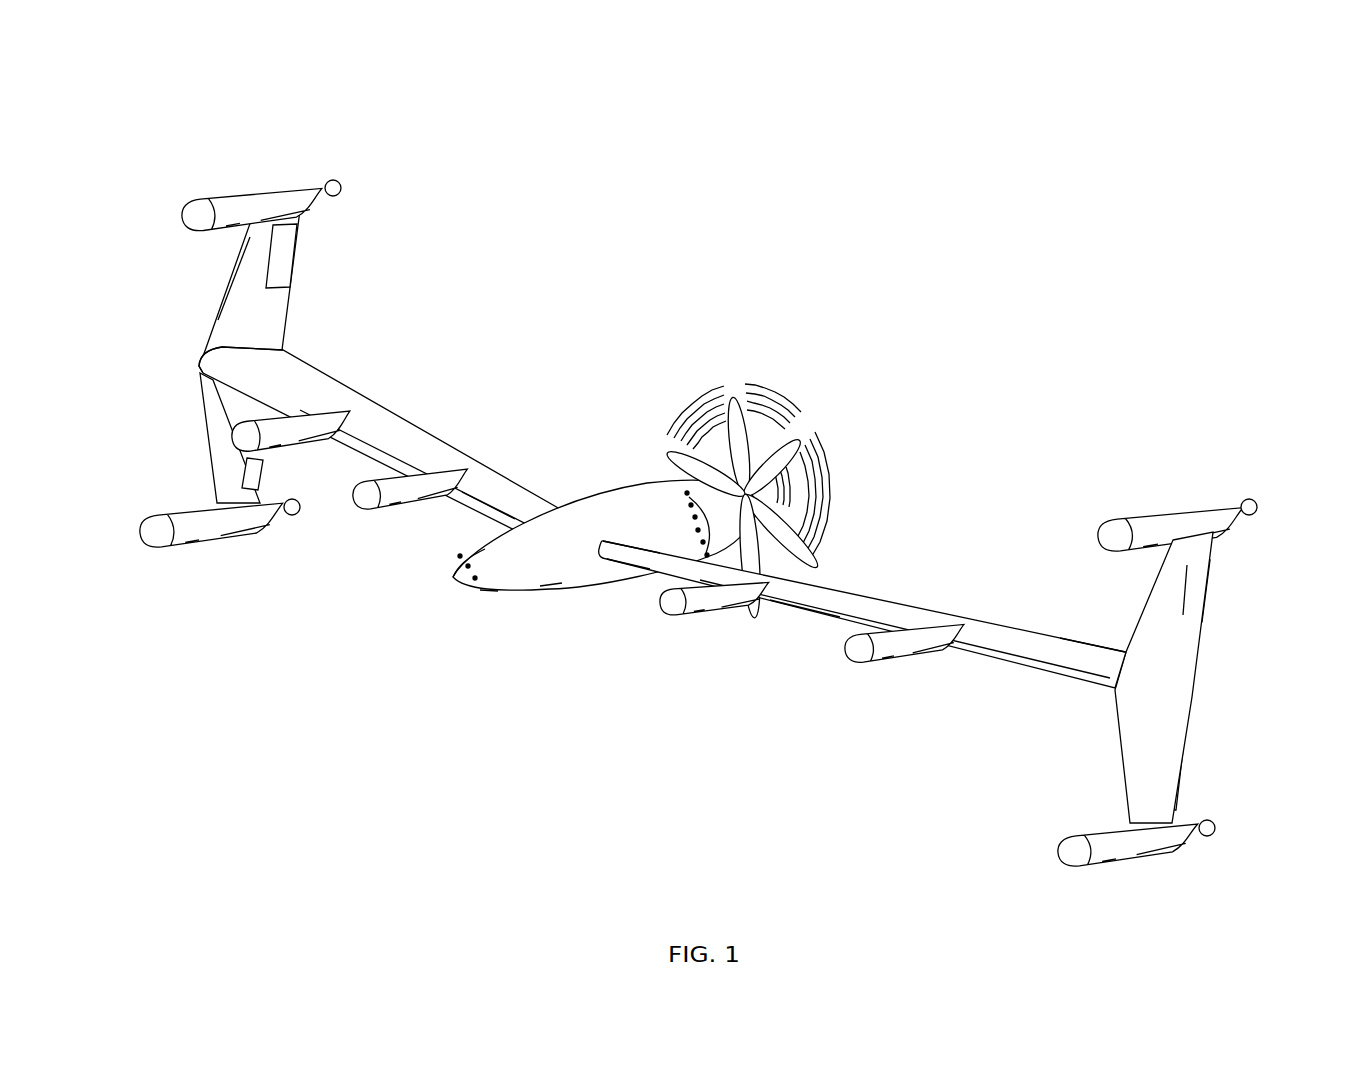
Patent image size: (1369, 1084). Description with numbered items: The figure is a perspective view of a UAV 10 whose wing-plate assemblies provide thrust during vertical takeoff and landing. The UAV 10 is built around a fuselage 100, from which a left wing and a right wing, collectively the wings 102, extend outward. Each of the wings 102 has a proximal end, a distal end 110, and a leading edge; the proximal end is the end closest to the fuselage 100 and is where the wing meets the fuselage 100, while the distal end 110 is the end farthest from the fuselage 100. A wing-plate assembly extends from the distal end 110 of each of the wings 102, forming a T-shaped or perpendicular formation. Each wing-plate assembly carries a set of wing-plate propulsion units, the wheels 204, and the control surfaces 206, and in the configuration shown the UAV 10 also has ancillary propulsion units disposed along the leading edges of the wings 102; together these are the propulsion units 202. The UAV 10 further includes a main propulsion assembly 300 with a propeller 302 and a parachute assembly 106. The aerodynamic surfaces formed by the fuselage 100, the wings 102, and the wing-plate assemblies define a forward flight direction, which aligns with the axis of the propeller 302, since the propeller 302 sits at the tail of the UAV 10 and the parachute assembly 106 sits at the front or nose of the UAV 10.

The UAV 10 is at (181, 92).
The fuselage 100 is at (637, 520).
The wings 102 is at (434, 379).
The parachute assembly 106 is at (453, 578).
The distal end 110 is at (414, 305).
The propulsion units 202 is at (1028, 858).
The wheels 204 is at (341, 187).
The control surfaces 206 is at (288, 257).
The main propulsion assembly 300 is at (738, 520).
The propeller 302 is at (635, 509).